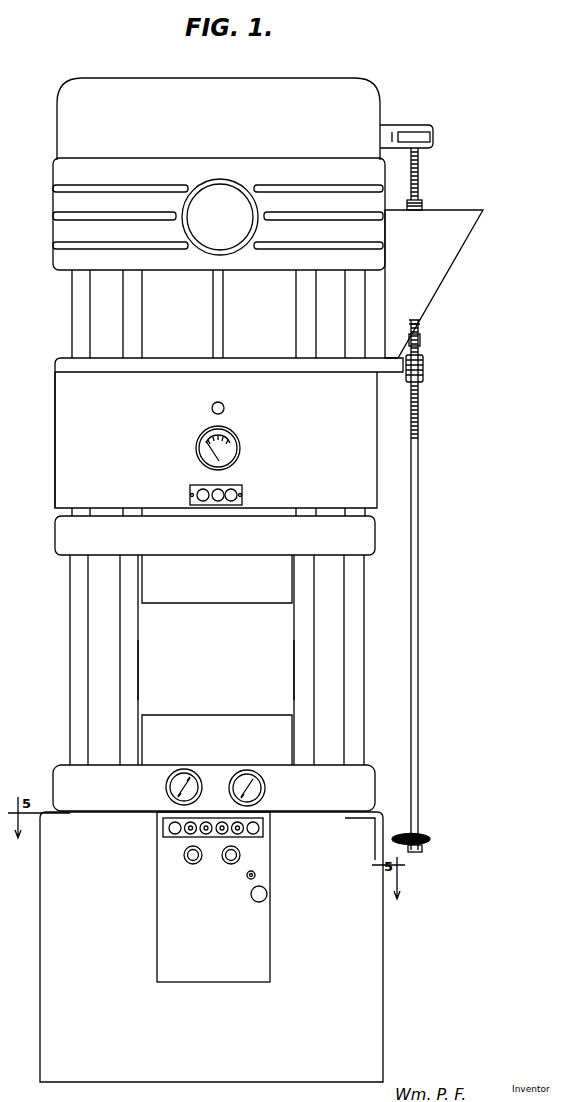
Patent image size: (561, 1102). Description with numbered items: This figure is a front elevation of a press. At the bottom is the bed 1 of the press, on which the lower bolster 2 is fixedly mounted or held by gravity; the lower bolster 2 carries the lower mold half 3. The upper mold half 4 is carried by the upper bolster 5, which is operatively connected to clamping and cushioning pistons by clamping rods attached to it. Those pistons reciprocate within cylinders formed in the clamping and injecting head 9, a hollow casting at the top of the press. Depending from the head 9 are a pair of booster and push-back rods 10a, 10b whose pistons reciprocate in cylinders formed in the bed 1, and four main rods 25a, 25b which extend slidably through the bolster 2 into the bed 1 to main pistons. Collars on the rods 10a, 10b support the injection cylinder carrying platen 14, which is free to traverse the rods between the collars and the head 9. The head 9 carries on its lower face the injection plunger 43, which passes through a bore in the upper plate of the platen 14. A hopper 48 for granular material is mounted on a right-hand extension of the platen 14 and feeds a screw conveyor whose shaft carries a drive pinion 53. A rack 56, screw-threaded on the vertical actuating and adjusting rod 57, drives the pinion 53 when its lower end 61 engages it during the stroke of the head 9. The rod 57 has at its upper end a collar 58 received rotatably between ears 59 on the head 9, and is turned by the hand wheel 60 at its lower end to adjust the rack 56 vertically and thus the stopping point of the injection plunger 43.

The bed 1 is at (310, 984).
The lower bolster 2 is at (297, 793).
The lower mold half 3 is at (220, 746).
The upper mold half 4 is at (236, 590).
The upper bolster 5 is at (299, 544).
The clamping and injecting head 9 is at (228, 128).
The injection cylinder carrying platen 14 is at (314, 448).
The booster and push-back rod 10a is at (394, 685).
The booster and push-back rod 10b is at (70, 621).
The main rod 25a is at (292, 673).
The main rod 25b is at (167, 665).
The injection plunger 43 is at (218, 319).
The hopper 48 is at (461, 250).
The drive pinion 53 is at (424, 366).
The rack 56 is at (421, 331).
The actuating and adjusting rod 57 is at (419, 586).
The collar 58 is at (407, 133).
The ears 59 is at (434, 134).
The hand wheel 60 is at (419, 840).
The lower end of the rack 61 is at (420, 349).